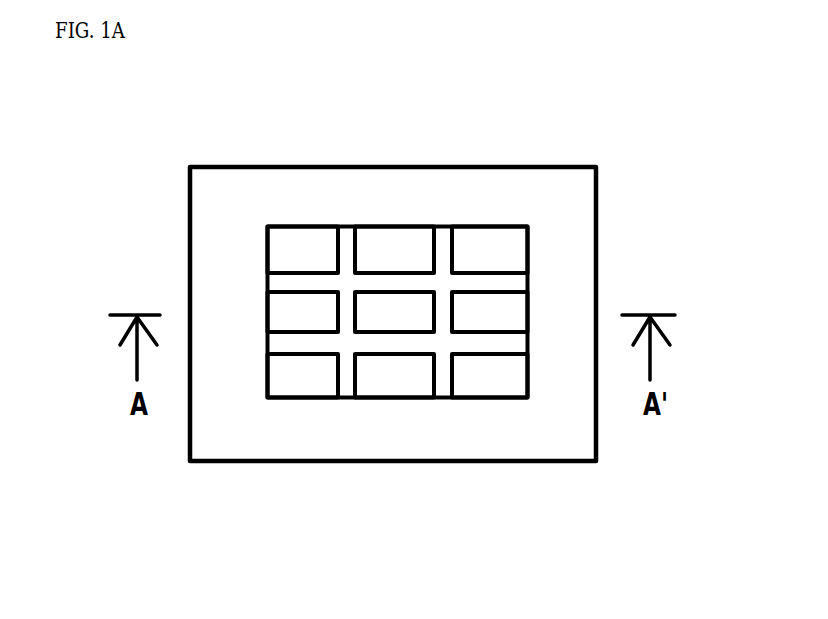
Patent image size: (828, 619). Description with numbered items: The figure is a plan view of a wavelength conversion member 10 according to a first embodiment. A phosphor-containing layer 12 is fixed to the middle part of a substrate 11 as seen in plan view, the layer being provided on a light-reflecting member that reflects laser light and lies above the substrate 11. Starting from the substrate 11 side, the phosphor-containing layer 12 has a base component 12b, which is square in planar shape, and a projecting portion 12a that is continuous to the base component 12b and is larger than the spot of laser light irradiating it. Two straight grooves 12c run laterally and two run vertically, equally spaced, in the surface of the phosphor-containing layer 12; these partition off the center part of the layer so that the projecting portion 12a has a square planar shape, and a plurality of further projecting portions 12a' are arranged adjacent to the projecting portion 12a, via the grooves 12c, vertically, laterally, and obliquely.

The wavelength conversion member 10 is at (617, 177).
The substrate 11 is at (273, 428).
The phosphor-containing layer 12 is at (568, 538).
The projecting portion 12a is at (391, 414).
The projecting portions 12a' is at (499, 445).
The base component 12b is at (443, 388).
The grooves 12c is at (390, 275).